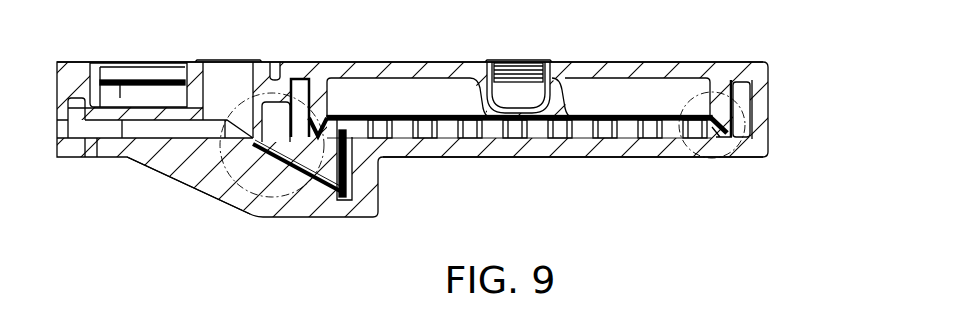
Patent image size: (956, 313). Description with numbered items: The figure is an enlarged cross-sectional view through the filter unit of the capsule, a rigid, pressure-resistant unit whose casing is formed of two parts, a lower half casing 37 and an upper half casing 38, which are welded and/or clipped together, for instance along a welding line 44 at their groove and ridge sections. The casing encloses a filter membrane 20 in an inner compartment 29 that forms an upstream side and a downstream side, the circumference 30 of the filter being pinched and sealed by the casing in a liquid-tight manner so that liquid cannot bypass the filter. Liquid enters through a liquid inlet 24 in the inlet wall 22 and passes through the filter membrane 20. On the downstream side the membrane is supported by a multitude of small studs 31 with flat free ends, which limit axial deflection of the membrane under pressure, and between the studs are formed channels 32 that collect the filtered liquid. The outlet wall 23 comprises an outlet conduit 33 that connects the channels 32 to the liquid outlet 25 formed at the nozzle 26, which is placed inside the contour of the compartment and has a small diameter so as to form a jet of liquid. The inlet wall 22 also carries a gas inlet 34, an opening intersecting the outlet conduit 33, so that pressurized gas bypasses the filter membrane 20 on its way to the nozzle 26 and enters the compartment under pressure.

The filter membrane 20 is at (650, 110).
The inlet wall 22 is at (421, 61).
The outlet wall 23 is at (375, 220).
The liquid inlet 24 is at (519, 61).
The liquid outlet 25 is at (92, 166).
The nozzle 26 is at (74, 160).
The inner compartment 29 is at (348, 88).
The circumference of the filter 30 is at (721, 112).
The studs 31 is at (640, 136).
The channels 32 is at (427, 136).
The outlet conduit 33 is at (333, 198).
The gas inlet 34 is at (262, 52).
The lower half casing 37 is at (760, 158).
The upper half casing 38 is at (771, 68).
The welding line 44 is at (752, 130).